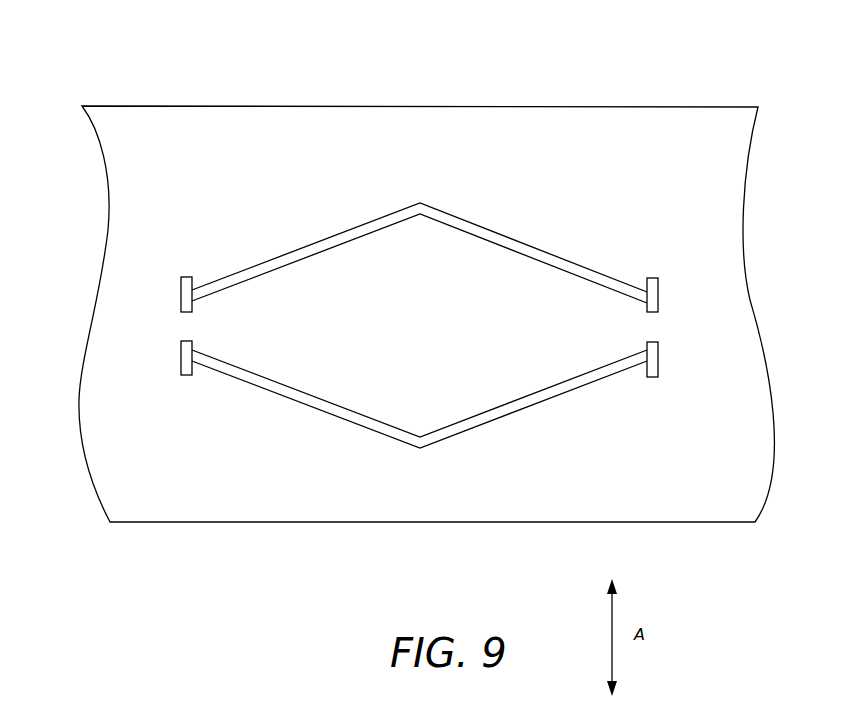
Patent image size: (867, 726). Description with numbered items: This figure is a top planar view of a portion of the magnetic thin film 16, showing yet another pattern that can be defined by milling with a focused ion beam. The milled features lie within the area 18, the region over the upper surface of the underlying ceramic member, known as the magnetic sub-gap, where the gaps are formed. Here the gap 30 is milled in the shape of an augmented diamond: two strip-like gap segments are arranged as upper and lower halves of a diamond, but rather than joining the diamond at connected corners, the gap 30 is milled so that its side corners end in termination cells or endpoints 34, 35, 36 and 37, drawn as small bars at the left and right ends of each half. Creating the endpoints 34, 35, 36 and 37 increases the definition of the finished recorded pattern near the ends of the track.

The magnetic thin film 16 is at (710, 168).
The area 18 is at (657, 130).
The gap 30 is at (412, 212).
The endpoint 34 is at (660, 293).
The endpoint 35 is at (657, 357).
The endpoint 36 is at (190, 357).
The endpoint 37 is at (187, 293).